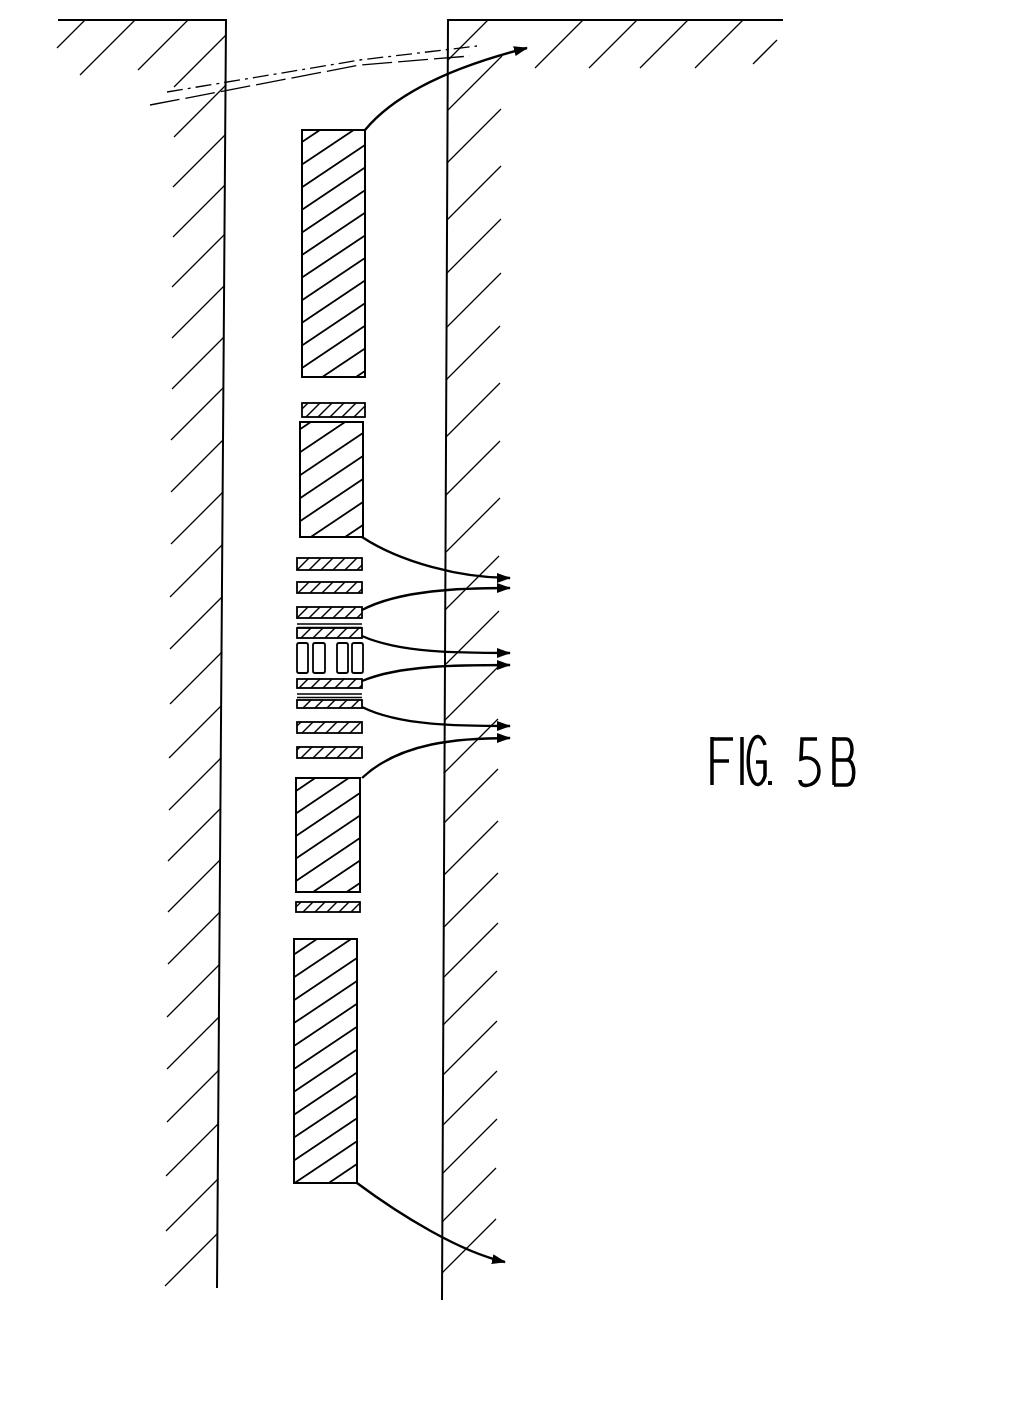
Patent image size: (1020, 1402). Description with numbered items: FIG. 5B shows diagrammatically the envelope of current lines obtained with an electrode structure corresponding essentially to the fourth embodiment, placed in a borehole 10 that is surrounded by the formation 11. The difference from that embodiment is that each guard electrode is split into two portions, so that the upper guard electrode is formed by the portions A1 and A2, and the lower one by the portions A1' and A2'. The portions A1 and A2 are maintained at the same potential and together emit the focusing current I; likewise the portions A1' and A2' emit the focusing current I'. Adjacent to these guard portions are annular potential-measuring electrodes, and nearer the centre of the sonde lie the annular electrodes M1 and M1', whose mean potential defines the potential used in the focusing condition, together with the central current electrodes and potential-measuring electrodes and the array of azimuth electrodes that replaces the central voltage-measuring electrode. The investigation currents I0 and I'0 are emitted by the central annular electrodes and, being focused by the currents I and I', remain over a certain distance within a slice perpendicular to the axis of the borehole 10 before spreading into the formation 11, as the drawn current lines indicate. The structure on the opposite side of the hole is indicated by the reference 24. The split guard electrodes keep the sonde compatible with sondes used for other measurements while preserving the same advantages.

The guard electrode portion A2 is at (248, 253).
The guard electrode portion A1 is at (245, 468).
The potential-measuring electrode M1 is at (244, 557).
The potential-measuring electrode M1' is at (239, 766).
The guard electrode portion A1' is at (238, 835).
The guard electrode portion A2' is at (235, 1061).
The wall 24 is at (233, 1228).
The borehole 10 is at (442, 1280).
The formation 11 is at (457, 1143).
The focusing current I is at (452, 313).
The investigation current I0 is at (508, 609).
The investigation current I'0 is at (451, 695).
The focusing current I' is at (445, 1000).